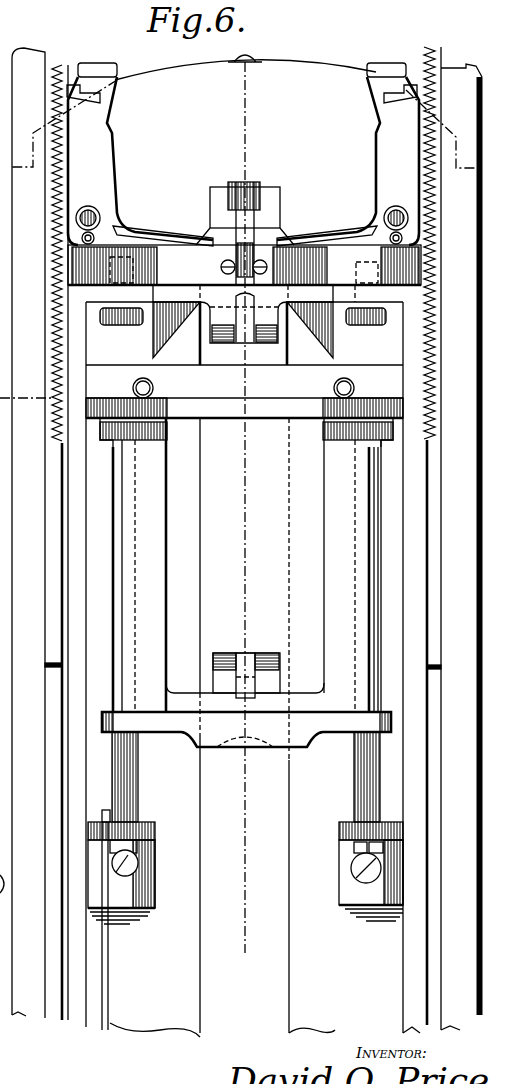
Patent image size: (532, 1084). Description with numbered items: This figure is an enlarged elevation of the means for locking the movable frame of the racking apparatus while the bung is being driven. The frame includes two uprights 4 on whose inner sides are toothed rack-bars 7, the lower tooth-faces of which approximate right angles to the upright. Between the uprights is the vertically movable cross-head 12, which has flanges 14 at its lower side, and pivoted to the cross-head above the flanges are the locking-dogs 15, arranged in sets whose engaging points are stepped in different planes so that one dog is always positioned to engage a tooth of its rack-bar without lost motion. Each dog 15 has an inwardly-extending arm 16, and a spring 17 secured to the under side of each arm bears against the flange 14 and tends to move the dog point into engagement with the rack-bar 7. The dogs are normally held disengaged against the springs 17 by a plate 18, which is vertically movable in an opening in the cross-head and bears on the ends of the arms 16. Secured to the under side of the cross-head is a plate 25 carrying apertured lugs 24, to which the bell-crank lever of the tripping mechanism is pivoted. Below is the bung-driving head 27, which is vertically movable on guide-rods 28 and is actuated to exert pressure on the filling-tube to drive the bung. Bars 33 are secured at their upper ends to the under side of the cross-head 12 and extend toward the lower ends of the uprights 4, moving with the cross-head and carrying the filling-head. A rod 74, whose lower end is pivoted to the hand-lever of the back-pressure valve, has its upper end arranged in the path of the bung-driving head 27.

The upright 4 is at (444, 538).
The rack-bar 7 is at (431, 405).
The cross-head 12 is at (245, 86).
The flange 14 is at (317, 283).
The locking-dog 15 is at (100, 148).
The arm 16 is at (170, 208).
The spring 17 is at (193, 236).
The plate 18 is at (217, 222).
The apertured lug 24 is at (250, 343).
The plate 25 is at (193, 278).
The head 27 is at (246, 745).
The guide-rod 28 is at (123, 782).
The bar 33 is at (78, 352).
The rod 74 is at (107, 978).